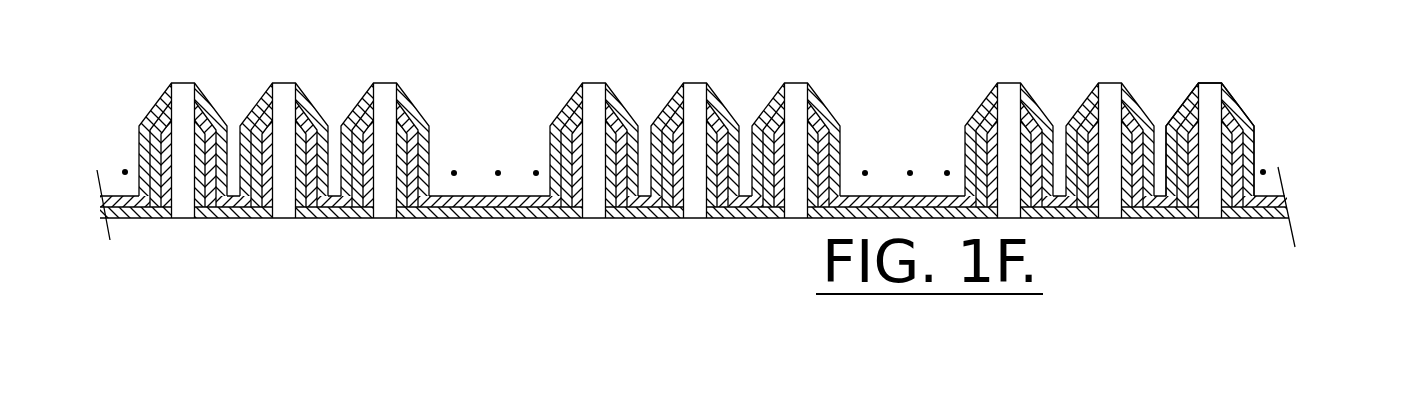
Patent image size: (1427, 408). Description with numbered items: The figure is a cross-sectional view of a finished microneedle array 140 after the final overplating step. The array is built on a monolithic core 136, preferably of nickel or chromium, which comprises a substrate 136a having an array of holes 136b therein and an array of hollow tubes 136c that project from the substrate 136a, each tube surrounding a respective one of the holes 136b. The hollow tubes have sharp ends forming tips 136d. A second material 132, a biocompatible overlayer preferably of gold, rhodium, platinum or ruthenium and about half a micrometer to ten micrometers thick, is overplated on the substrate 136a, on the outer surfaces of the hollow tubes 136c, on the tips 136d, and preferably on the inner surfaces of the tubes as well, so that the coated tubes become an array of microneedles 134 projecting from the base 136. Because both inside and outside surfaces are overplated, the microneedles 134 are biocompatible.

The second material 132 is at (1259, 147).
The microneedles 134 is at (1097, 70).
The monolithic core 136 is at (730, 187).
The substrate 136a is at (1262, 217).
The holes 136b is at (1212, 218).
The hollow tubes 136c is at (1213, 125).
The tips 136d is at (1237, 127).
The microneedle array 140 is at (756, 166).